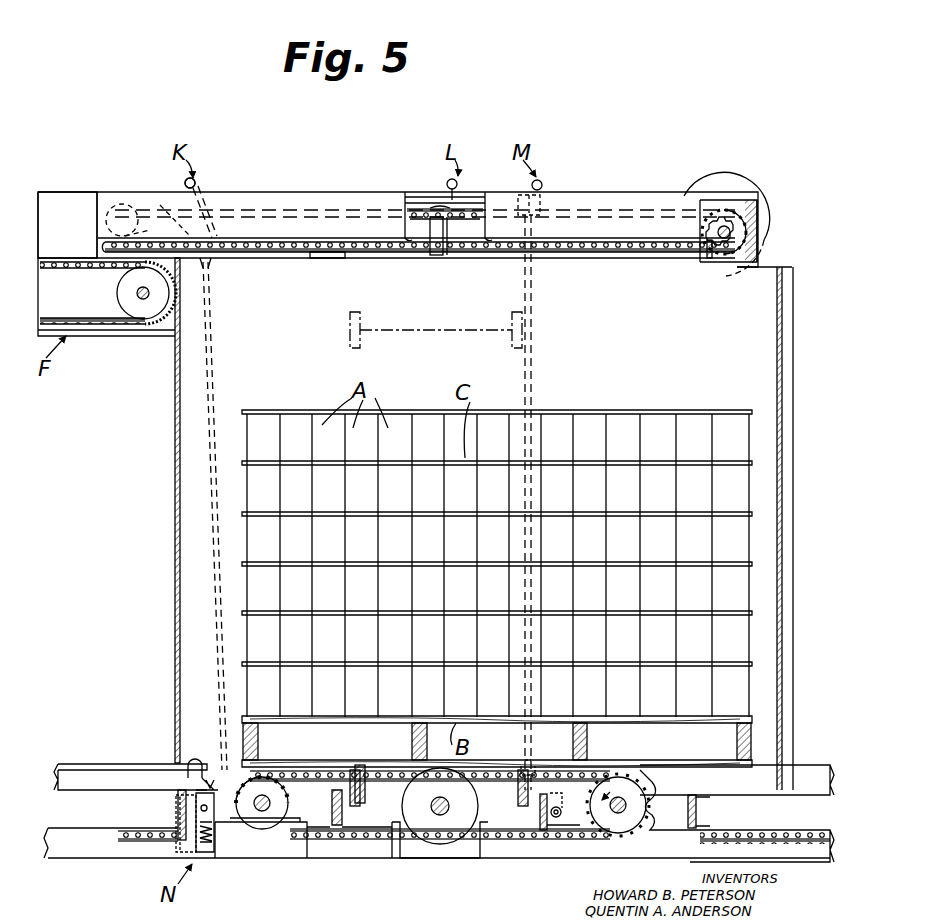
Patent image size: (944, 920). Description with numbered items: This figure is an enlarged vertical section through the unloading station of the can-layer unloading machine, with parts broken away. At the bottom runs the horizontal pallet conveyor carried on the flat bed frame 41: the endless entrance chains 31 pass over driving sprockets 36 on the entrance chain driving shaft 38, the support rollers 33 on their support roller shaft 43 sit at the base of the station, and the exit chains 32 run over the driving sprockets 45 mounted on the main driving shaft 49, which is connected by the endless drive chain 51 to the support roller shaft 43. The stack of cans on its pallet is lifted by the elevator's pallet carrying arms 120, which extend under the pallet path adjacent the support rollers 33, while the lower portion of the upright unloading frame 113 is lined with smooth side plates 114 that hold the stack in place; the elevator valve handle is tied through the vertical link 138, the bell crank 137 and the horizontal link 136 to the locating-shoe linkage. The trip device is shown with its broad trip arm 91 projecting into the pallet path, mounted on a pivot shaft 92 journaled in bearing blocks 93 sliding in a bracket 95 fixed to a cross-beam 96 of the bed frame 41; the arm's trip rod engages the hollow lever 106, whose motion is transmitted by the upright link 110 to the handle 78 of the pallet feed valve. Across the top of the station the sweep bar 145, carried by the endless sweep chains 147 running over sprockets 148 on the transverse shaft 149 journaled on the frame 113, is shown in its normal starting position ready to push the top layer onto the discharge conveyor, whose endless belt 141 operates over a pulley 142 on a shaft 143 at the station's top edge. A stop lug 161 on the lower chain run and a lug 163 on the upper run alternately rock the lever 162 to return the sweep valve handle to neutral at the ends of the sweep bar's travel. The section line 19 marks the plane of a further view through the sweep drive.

The section line 19 is at (60, 256).
The handle 78 is at (196, 184).
The sprockets 148 is at (148, 195).
The endless belt 141 is at (107, 326).
The pulley 142 is at (158, 318).
The shaft 143 is at (136, 293).
The side plates 114 is at (175, 514).
The upright link 110 is at (210, 335).
The stop lug 161 is at (328, 256).
The lug 163 is at (450, 213).
The lever 162 is at (438, 238).
The sweep chains 147 is at (573, 254).
The sweep bar 145 is at (712, 252).
The transverse shaft 149 is at (726, 226).
The unloading frame 113 is at (758, 212).
The pallet carrying arms 120 is at (512, 325).
The vertical link 138 is at (532, 384).
The bell crank 137 is at (540, 764).
The bed frame 41 is at (88, 830).
The trip arm 91 is at (188, 760).
The hollow lever 106 is at (208, 775).
The pivot shaft 92 is at (202, 800).
The cross-beam 96 is at (175, 806).
The bearing blocks 93 is at (204, 822).
The bracket 95 is at (212, 848).
The driving sprockets 45 is at (280, 816).
The driving shaft 49 is at (264, 796).
The exit chains 32 is at (296, 784).
The drive chain 51 is at (368, 772).
The support roller shaft 43 is at (440, 806).
The support rollers 33 is at (440, 838).
The horizontal link 136 is at (556, 820).
The driving sprockets 36 is at (610, 825).
The driving shaft 38 is at (650, 795).
The entrance chains 31 is at (712, 840).